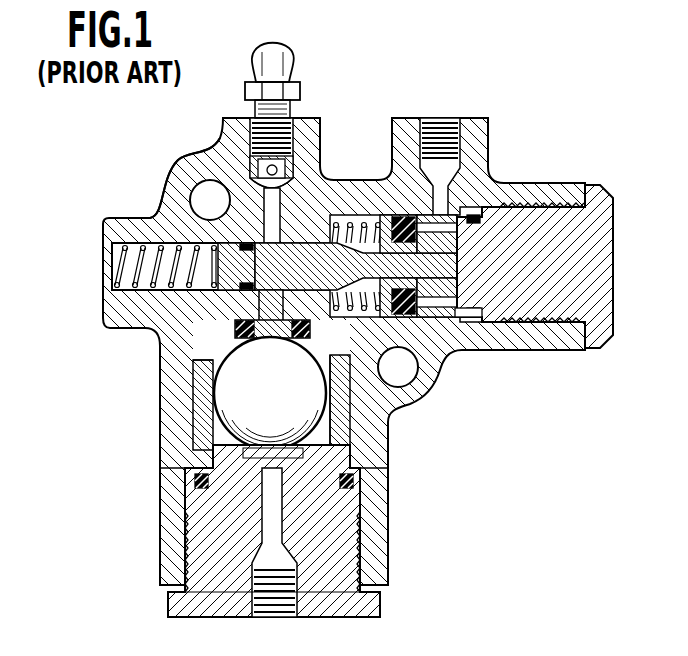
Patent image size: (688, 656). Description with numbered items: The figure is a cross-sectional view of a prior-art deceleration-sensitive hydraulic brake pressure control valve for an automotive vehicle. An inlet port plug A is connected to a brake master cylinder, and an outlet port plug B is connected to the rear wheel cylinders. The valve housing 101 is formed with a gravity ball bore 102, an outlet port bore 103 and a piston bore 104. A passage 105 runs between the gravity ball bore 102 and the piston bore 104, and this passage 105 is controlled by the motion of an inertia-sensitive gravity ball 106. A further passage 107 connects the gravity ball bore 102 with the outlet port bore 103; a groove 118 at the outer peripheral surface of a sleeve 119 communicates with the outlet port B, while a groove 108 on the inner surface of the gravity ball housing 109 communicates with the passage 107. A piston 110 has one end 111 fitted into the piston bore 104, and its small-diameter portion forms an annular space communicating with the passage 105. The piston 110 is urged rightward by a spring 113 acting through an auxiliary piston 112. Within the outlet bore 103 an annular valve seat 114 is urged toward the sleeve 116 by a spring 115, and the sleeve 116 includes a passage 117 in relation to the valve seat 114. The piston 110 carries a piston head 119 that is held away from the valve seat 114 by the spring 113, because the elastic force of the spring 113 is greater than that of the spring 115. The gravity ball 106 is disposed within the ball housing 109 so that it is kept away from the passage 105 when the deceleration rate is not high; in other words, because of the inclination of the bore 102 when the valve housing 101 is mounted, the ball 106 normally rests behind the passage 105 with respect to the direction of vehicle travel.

The valve housing 101 is at (503, 197).
The gravity ball bore 102 is at (350, 452).
The outlet port bore 103 is at (325, 398).
The piston bore 104 is at (303, 240).
The passage 105 is at (248, 292).
The inertia-sensitive gravity ball 106 is at (215, 390).
The passage 107 is at (272, 330).
The groove 108 is at (340, 416).
The gravity ball housing 109 is at (200, 362).
The piston 110 is at (473, 260).
The end of piston 111 is at (213, 157).
The auxiliary piston 112 is at (173, 217).
The spring 113 is at (128, 218).
The annular valve seat 114 is at (400, 215).
The spring 115 is at (362, 226).
The sleeve 116 is at (464, 208).
The passage 117 is at (420, 356).
The groove 118 is at (460, 320).
The piston head 119 is at (515, 327).
The inlet port plug A is at (220, 598).
The outlet port plug B is at (477, 133).